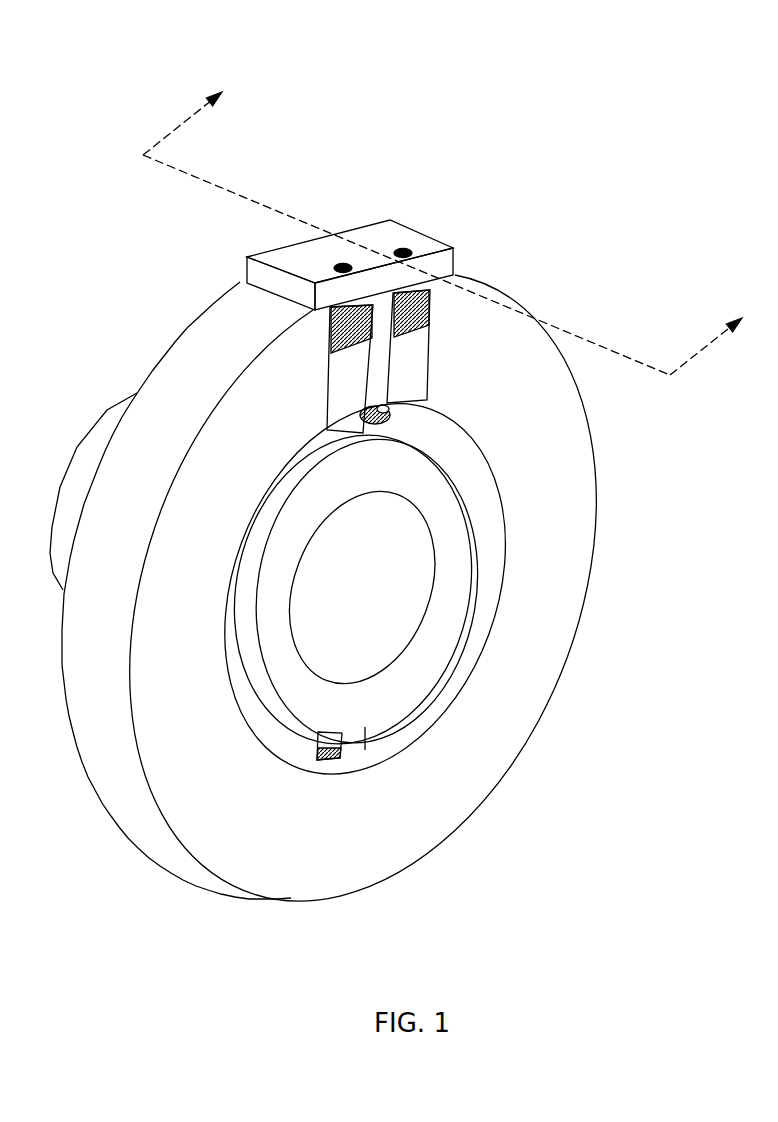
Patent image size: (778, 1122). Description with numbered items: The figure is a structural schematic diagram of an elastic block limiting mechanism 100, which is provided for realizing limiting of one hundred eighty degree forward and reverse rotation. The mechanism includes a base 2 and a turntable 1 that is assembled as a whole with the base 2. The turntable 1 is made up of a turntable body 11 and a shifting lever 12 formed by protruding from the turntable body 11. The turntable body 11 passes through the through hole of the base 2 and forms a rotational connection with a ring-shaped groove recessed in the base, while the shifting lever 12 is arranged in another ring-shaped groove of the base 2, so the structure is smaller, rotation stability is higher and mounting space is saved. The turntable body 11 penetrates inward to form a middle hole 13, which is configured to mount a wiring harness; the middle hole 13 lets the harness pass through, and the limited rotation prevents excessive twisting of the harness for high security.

The elastic block limiting mechanism 100 is at (363, 41).
The turntable 1 is at (428, 589).
The turntable body 11 is at (413, 663).
The shifting lever 12 is at (372, 755).
The middle hole 13 is at (386, 592).
The base 2 is at (457, 830).